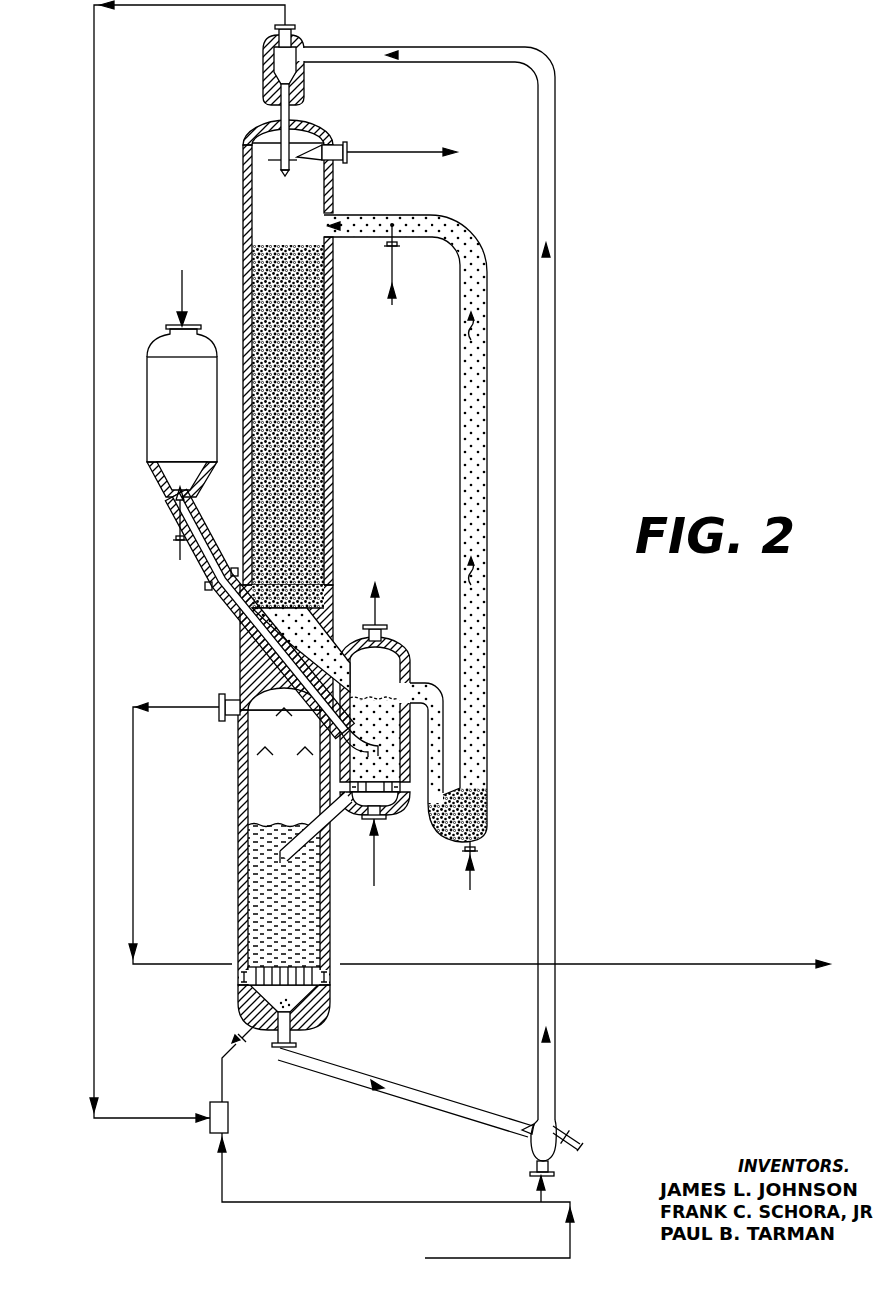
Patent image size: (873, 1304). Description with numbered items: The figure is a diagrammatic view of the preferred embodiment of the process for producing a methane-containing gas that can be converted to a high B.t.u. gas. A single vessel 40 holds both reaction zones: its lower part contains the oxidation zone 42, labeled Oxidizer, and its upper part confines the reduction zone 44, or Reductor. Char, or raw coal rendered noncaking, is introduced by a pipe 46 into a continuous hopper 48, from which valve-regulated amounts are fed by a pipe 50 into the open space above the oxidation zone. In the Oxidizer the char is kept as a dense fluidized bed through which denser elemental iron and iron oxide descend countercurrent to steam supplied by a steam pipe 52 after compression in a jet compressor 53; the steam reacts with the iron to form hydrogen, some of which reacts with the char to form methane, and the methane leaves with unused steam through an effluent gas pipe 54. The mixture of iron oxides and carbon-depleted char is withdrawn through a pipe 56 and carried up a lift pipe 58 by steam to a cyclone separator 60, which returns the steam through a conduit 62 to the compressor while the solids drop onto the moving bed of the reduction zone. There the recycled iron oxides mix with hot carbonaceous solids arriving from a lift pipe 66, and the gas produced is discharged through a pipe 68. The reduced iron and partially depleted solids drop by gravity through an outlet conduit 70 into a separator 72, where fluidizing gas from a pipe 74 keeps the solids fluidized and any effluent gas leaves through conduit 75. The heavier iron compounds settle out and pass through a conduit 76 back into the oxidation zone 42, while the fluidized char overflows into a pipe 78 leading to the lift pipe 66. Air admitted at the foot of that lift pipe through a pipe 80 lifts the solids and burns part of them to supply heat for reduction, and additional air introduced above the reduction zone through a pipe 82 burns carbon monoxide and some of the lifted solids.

The vessel 40 is at (240, 662).
The oxidation zone 42 is at (240, 912).
The reduction zone 44 is at (326, 513).
The pipe 46 is at (182, 300).
The continuous hopper 48 is at (152, 410).
The pipe 50 is at (205, 566).
The steam pipe 52 is at (226, 1078).
The jet compressor 53 is at (230, 1118).
The effluent gas pipe 54 is at (134, 826).
The pipe 56 is at (403, 1087).
The lift pipe 58 is at (416, 36).
The cyclone separator 60 is at (278, 62).
The conduit 62 is at (92, 484).
The lift pipe 66 is at (480, 513).
The pipe 68 is at (383, 155).
The outlet conduit 70 is at (326, 620).
The separator 72 is at (404, 650).
The pipe 74 is at (375, 877).
The conduit 75 is at (385, 613).
The conduit 76 is at (300, 851).
The pipe 78 is at (417, 686).
The pipe 80 is at (480, 852).
The pipe 82 is at (393, 274).